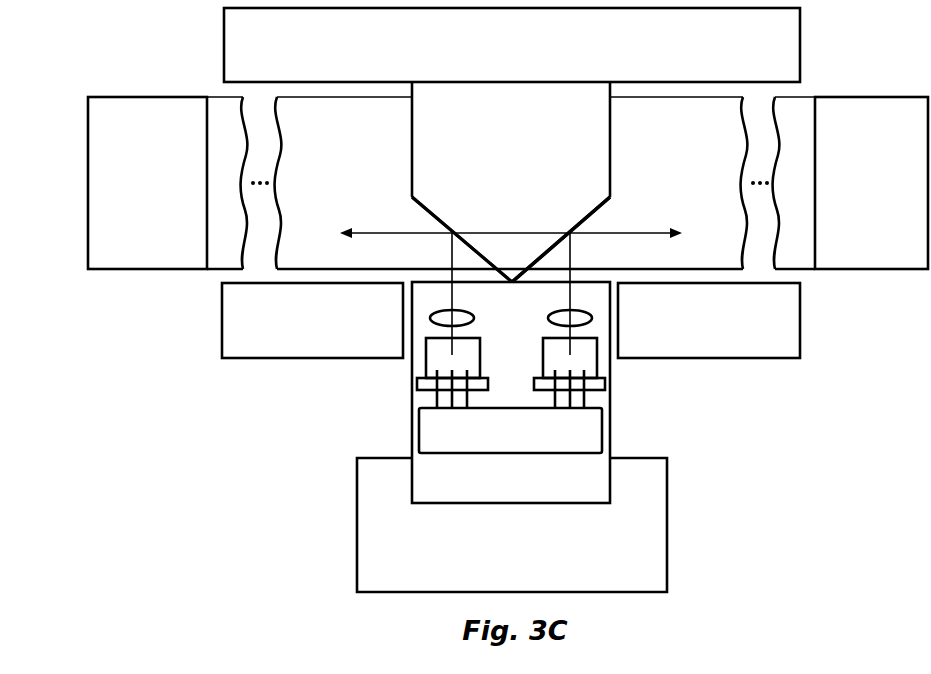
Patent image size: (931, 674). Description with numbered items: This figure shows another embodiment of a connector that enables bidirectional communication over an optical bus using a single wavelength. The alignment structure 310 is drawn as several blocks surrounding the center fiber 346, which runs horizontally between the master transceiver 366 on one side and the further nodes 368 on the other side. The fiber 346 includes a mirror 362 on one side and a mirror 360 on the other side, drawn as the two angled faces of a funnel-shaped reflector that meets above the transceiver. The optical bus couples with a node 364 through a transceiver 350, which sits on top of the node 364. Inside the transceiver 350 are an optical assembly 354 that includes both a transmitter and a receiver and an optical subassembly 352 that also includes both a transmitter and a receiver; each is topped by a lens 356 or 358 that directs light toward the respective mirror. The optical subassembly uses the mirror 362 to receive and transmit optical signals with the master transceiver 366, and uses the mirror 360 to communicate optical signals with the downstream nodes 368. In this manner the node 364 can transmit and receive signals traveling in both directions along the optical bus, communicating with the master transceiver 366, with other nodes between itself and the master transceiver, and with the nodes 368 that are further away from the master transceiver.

The alignment structure 310 is at (321, 56).
The center fiber 346 is at (494, 142).
The mirror 362 is at (455, 226).
The mirror 360 is at (566, 224).
The left lens 356 is at (440, 309).
The right lens 358 is at (583, 309).
The optical assembly 354 is at (417, 383).
The optical subassembly 352 is at (605, 383).
The transceiver 350 is at (612, 485).
The node 364 is at (644, 557).
The master transceiver 366 is at (130, 215).
The nodes 368 is at (856, 202).